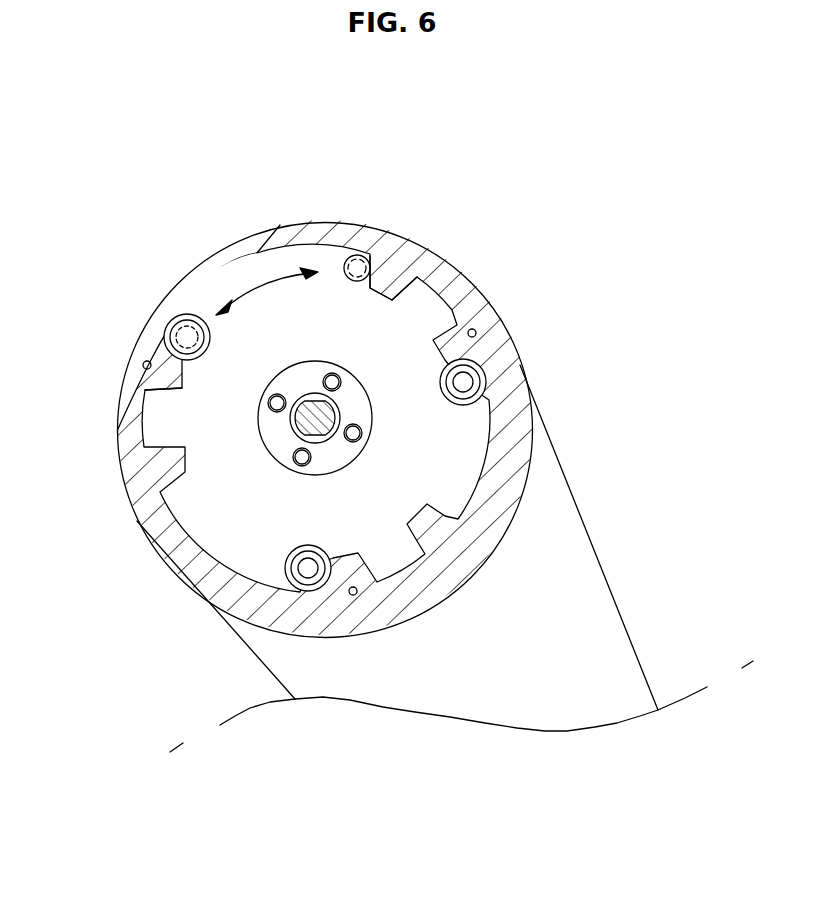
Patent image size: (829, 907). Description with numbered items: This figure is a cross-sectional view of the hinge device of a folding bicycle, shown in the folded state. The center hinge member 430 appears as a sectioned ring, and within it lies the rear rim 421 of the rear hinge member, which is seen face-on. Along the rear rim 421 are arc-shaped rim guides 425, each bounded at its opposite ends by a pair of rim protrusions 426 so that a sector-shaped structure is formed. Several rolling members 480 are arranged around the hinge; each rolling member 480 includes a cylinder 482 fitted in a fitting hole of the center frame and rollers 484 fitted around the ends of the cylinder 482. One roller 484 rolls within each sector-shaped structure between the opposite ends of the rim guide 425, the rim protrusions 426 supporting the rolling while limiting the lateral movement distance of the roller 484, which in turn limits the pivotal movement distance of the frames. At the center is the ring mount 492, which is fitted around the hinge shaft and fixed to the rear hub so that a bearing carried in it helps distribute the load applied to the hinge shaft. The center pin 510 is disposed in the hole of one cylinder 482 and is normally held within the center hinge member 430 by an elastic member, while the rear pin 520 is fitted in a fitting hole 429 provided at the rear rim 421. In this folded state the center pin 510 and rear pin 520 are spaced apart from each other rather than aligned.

The rear rim 421 is at (290, 237).
The rim guide 425 is at (263, 271).
The rim protrusion 426 is at (163, 378).
The fitting hole 429 is at (350, 254).
The center hinge member 430 is at (496, 274).
The rolling member 480 is at (487, 380).
The cylinder 482 is at (180, 330).
The roller 484 is at (167, 340).
The ring mount 492 is at (326, 410).
The center pin 510 is at (156, 293).
The rear pin 520 is at (366, 256).